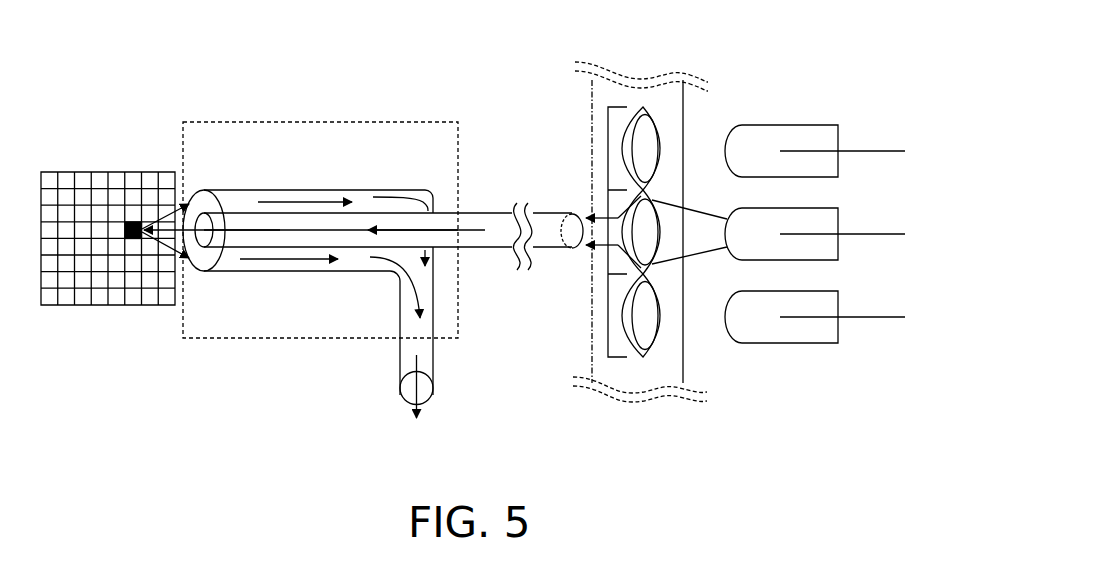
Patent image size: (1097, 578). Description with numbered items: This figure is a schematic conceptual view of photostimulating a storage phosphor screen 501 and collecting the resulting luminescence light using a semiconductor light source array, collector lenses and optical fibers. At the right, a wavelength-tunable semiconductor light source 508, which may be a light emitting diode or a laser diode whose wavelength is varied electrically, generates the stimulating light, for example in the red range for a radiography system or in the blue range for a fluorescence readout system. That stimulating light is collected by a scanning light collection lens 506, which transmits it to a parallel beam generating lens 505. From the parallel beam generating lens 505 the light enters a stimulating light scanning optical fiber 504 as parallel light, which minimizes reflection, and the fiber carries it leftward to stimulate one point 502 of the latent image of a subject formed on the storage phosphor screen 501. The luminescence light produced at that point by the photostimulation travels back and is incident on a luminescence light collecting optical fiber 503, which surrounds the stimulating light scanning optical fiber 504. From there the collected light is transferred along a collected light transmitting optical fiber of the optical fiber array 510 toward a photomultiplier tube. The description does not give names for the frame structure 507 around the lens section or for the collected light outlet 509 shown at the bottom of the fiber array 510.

The storage phosphor screen 501 is at (65, 203).
The one point of a latent image 502 is at (132, 220).
The luminescence light collecting optical fiber 503 is at (208, 202).
The stimulating light scanning optical fiber 504 is at (240, 220).
The parallel beam generating lens 505 is at (617, 167).
The scanning light collection lens 506 is at (642, 140).
The light source housing 507 is at (613, 363).
The wavelength-tunable semiconductor light source 508 is at (758, 158).
The light outlet 509 is at (414, 390).
The optical fiber array 510 is at (335, 127).